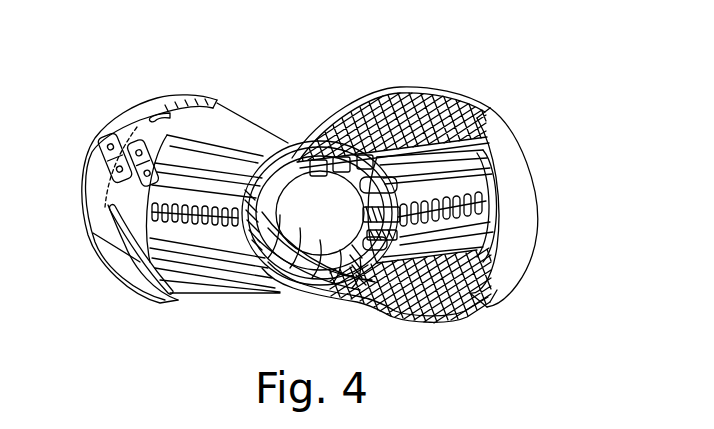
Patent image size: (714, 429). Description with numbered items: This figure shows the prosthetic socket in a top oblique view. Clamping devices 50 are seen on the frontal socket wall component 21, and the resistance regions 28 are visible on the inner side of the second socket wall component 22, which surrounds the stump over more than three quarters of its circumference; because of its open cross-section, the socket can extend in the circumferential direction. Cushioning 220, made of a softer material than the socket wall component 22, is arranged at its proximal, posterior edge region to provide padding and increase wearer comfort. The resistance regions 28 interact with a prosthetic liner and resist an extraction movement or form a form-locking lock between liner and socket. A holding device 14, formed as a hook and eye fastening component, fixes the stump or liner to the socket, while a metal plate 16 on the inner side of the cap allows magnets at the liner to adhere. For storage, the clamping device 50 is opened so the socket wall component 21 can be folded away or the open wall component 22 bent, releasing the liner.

The holding device 14 is at (317, 105).
The metal plate 16 is at (288, 197).
The frontal socket wall component 21 is at (135, 125).
The second socket wall component 22 is at (447, 95).
The resistance regions 28 is at (205, 160).
The clamping device 50 is at (98, 142).
The cushioning 220 is at (500, 148).